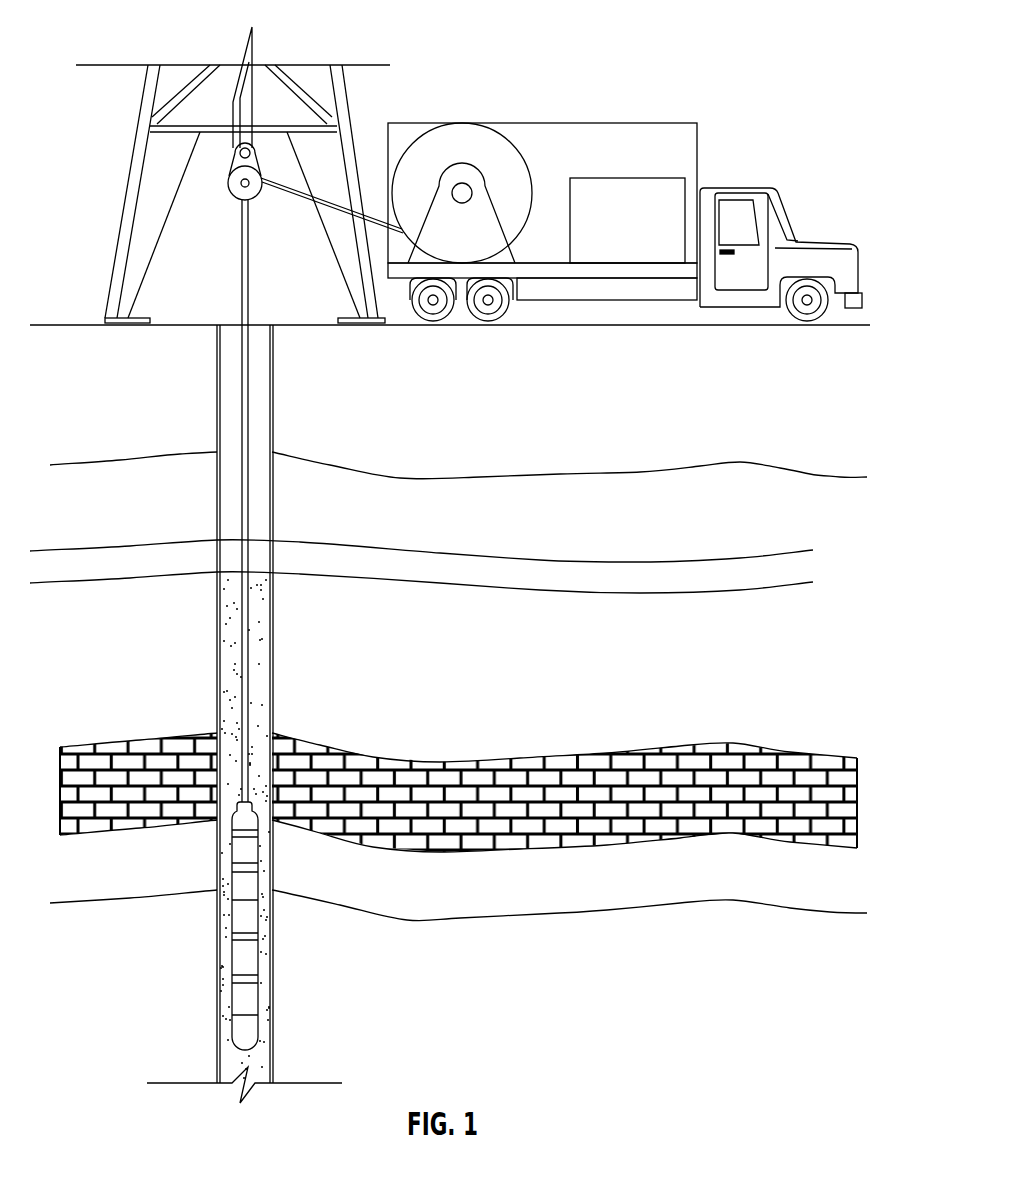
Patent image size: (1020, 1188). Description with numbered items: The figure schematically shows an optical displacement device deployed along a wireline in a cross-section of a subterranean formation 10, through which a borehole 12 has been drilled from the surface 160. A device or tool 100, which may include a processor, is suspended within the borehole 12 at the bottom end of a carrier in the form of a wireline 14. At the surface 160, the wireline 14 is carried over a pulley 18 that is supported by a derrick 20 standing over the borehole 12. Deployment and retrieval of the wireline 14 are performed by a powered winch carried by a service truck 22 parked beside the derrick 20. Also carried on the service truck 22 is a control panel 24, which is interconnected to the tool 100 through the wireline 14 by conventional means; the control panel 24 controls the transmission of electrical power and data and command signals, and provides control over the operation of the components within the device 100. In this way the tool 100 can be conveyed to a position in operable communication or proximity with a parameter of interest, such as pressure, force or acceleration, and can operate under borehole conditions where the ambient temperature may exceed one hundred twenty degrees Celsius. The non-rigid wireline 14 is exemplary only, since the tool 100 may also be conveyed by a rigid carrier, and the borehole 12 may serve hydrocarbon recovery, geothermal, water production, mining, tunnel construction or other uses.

The subterranean formation 10 is at (542, 531).
The borehole 12 is at (216, 505).
The wireline 14 is at (248, 507).
The pulley 18 is at (228, 183).
The derrick 20 is at (138, 127).
The service truck 22 is at (573, 123).
The control panel 24 is at (625, 178).
The tool 100 is at (246, 957).
The surface 160 is at (57, 326).